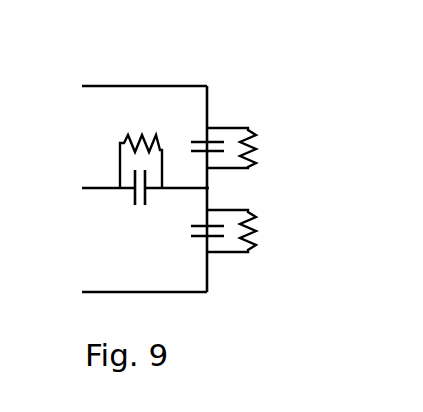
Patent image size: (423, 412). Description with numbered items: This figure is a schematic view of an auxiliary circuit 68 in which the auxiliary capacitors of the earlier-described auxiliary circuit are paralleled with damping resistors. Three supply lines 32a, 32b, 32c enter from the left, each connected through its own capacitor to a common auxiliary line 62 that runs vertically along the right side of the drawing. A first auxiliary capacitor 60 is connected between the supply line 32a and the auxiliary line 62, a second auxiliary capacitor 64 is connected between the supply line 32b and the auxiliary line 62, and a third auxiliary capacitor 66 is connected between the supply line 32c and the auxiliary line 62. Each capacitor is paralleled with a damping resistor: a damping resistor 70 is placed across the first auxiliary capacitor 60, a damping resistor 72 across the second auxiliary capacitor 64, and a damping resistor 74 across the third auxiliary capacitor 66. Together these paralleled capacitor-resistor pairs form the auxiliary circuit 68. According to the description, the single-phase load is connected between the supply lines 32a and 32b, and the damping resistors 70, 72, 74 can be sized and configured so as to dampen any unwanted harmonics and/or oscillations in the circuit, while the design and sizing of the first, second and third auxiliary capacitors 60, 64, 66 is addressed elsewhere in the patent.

The supply line 32a is at (90, 85).
The supply line 32b is at (90, 187).
The supply line 32c is at (92, 291).
The first auxiliary capacitor 60 is at (210, 122).
The auxiliary line 62 is at (208, 192).
The second auxiliary capacitor 64 is at (135, 204).
The third auxiliary capacitor 66 is at (207, 260).
The auxiliary circuit 68 is at (162, 55).
The damping resistor 70 is at (255, 140).
The damping resistor 72 is at (126, 143).
The damping resistor 74 is at (273, 237).